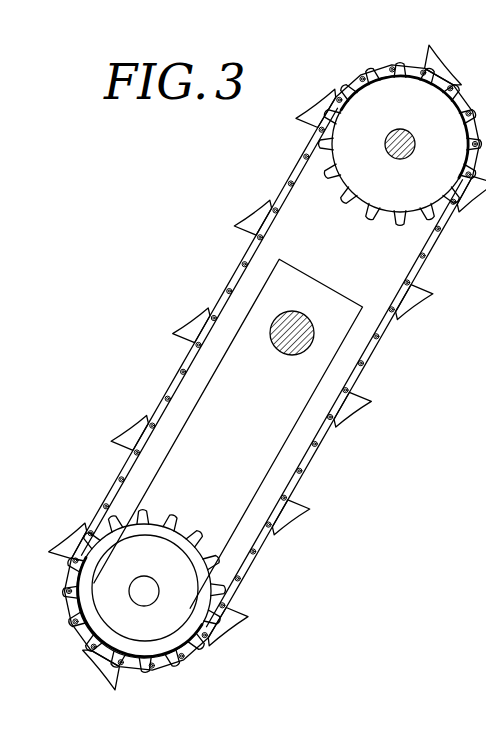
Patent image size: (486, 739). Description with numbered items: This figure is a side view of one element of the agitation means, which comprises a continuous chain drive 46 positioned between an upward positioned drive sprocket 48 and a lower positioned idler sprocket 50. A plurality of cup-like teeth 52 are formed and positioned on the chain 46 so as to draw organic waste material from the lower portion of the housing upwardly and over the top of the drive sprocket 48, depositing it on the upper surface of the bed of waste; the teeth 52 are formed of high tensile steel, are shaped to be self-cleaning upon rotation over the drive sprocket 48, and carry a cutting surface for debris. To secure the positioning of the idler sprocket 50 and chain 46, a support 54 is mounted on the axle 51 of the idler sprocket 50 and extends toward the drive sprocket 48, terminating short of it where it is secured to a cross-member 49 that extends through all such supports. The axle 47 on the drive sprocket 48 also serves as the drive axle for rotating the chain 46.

The continuous chain drive 46 is at (370, 362).
The axle 47 is at (397, 159).
The drive sprocket 48 is at (371, 108).
The cross-member 49 is at (277, 352).
The idler sprocket 50 is at (185, 630).
The axle 51 is at (149, 588).
The cup-like teeth 52 is at (181, 331).
The support 54 is at (257, 452).